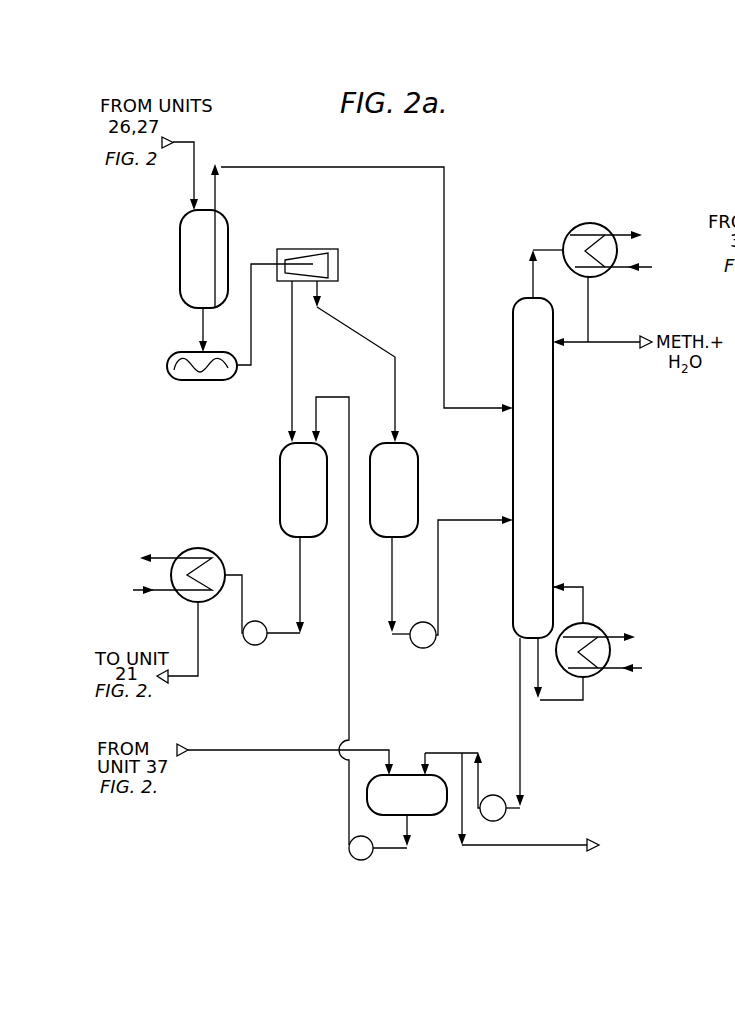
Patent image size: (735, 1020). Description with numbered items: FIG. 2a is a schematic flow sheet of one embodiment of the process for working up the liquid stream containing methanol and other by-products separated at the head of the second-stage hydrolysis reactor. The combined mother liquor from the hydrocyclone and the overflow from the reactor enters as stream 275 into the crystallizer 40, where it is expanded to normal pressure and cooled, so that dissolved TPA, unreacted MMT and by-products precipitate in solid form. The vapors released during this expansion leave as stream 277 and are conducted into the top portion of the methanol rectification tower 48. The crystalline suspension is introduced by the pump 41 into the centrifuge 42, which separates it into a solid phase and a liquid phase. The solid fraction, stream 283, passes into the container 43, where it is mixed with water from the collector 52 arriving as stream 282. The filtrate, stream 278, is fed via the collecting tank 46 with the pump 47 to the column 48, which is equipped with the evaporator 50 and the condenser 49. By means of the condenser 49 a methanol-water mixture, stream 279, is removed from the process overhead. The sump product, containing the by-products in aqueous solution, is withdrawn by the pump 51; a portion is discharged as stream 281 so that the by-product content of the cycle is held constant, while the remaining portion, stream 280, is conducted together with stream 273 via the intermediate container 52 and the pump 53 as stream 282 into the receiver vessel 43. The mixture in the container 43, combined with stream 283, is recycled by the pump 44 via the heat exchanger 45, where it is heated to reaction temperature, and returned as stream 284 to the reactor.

The crystallizer 40 is at (180, 266).
The pump 41 is at (183, 382).
The centrifuge 42 is at (320, 249).
The container 43 is at (280, 482).
The pump 44 is at (259, 643).
The heat exchanger 45 is at (212, 549).
The collecting tank 46 is at (426, 466).
The pump 47 is at (415, 647).
The methanol rectification tower 48 is at (554, 458).
The condenser 49 is at (577, 226).
The evaporator 50 is at (588, 678).
The pump 51 is at (496, 821).
The collector 52 is at (417, 815).
The pump 53 is at (352, 857).
The stream 273 is at (285, 743).
The stream 275 is at (178, 173).
The stream 277 is at (362, 270).
The stream 278 is at (372, 361).
The stream 279 is at (602, 312).
The stream 280 is at (449, 745).
The stream 281 is at (528, 819).
The stream 282 is at (329, 621).
The stream 283 is at (309, 361).
The stream 284 is at (177, 642).